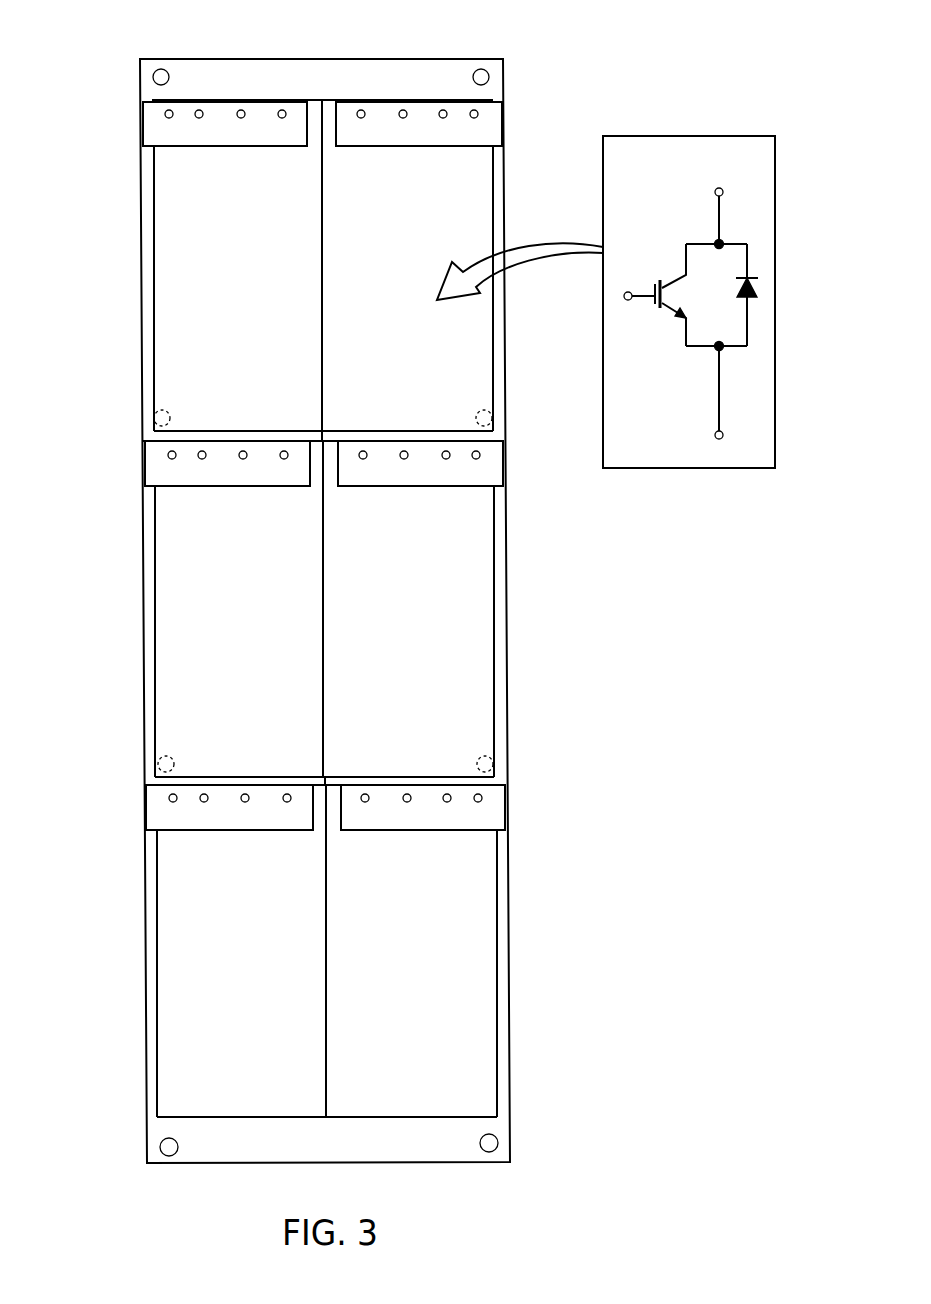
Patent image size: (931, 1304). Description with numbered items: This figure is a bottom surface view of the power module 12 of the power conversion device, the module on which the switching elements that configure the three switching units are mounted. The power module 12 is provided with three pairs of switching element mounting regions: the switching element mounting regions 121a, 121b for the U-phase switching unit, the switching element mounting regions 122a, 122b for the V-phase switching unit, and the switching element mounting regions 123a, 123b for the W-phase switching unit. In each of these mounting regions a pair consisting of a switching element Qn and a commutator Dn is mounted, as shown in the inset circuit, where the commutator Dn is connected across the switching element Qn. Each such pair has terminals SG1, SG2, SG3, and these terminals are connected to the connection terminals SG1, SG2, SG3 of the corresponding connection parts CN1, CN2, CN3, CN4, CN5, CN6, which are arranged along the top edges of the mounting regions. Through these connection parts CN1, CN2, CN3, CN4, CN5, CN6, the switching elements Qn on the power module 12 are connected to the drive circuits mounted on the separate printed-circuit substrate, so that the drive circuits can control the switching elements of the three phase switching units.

The power module 12 is at (512, 579).
The switching element mounting region 121a is at (455, 225).
The switching element mounting region 121b is at (165, 237).
The switching element mounting region 122a is at (458, 637).
The switching element mounting region 122b is at (170, 616).
The switching element mounting region 123a is at (460, 980).
The switching element mounting region 123b is at (160, 965).
The connection part CN1 is at (173, 147).
The connection part CN2 is at (477, 146).
The connection part CN3 is at (165, 487).
The connection part CN4 is at (462, 486).
The connection part CN5 is at (187, 831).
The connection part CN6 is at (465, 830).
The connection terminal SG1 is at (169, 110).
The connection terminal SG2 is at (199, 110).
The connection terminal SG3 is at (241, 110).
The switching element Qn is at (668, 312).
The commutator Dn is at (757, 277).